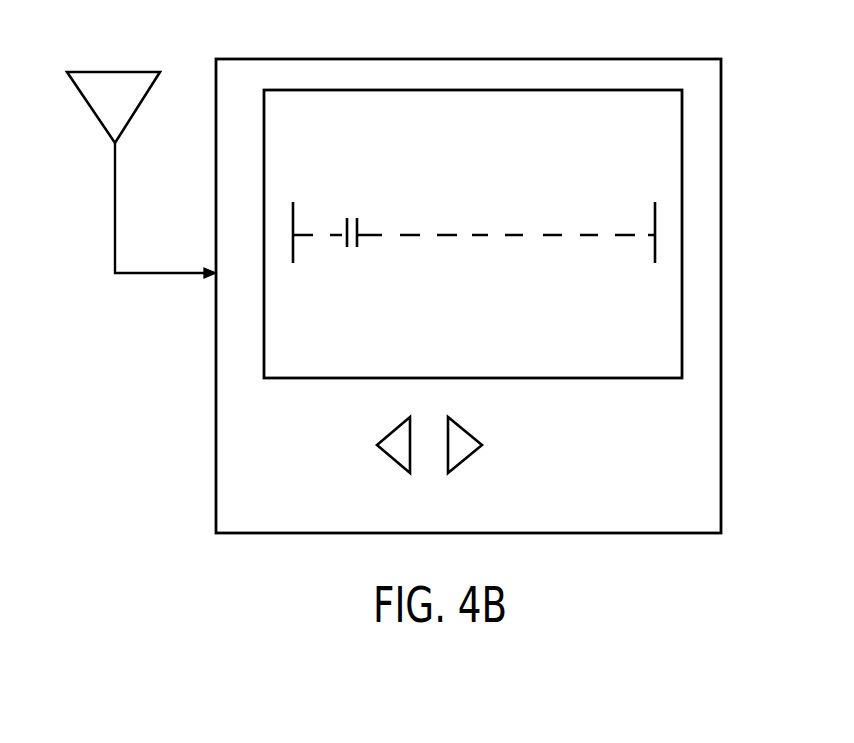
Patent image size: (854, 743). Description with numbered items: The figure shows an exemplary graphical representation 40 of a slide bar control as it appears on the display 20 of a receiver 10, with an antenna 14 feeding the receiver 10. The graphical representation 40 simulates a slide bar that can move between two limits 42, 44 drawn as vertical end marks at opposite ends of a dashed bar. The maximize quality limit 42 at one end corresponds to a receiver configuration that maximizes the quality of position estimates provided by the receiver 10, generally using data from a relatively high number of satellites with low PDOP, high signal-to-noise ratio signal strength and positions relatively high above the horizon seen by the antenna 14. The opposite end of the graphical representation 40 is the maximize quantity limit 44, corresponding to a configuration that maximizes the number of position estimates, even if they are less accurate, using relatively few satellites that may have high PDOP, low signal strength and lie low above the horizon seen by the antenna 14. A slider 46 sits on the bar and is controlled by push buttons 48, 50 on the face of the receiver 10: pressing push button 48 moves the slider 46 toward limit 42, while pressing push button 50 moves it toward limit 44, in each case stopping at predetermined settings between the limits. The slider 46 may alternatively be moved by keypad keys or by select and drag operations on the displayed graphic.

The receiver 10 is at (657, 512).
The antenna 14 is at (147, 95).
The display 20 is at (513, 378).
The graphical representation 40 is at (525, 275).
The maximize quality limit 42 is at (293, 257).
The maximize quantity limit 44 is at (655, 253).
The slider 46 is at (357, 243).
The push button 48 is at (392, 460).
The push button 50 is at (462, 467).